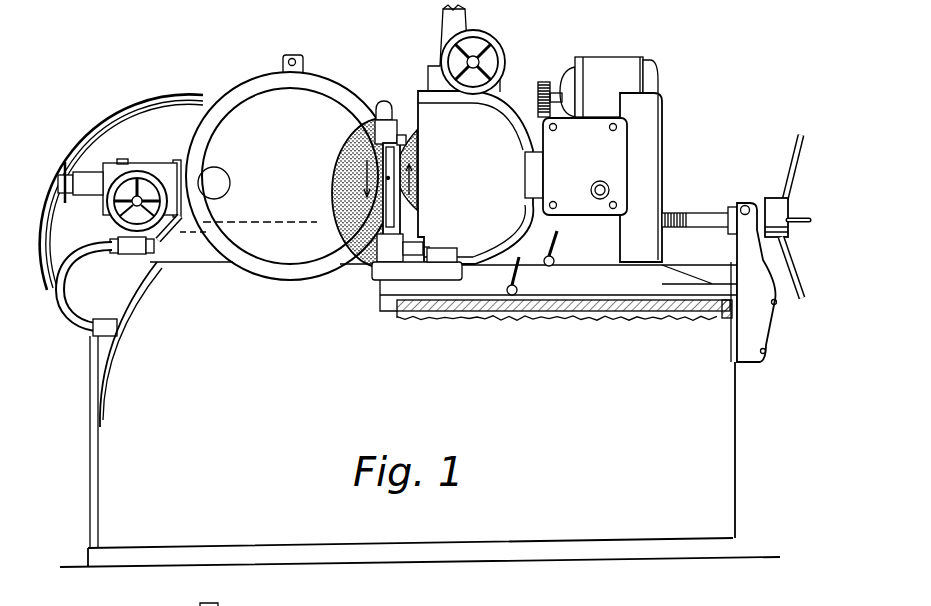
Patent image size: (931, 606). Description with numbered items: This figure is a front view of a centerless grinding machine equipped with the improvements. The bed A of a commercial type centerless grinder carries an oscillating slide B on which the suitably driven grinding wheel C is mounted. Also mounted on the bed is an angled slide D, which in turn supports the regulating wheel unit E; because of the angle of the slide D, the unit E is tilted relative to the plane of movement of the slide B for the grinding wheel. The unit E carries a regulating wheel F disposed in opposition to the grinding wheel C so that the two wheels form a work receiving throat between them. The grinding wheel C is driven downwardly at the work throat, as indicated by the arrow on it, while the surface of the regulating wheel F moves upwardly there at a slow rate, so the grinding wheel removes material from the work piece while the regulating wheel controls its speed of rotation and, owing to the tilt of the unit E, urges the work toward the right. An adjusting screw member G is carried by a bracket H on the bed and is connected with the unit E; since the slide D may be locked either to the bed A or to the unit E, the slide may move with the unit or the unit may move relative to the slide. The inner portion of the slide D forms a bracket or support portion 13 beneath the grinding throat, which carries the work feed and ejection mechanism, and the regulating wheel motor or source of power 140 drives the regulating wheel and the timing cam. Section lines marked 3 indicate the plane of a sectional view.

The bed A is at (685, 517).
The oscillating slide B is at (185, 137).
The grinding wheel C is at (352, 118).
The angled slide D is at (590, 282).
The regulating wheel unit E is at (648, 142).
The regulating wheel F is at (417, 180).
The adjusting screw member G is at (703, 213).
The bracket H is at (755, 315).
The bracket or support portion 13 is at (388, 247).
The regulating wheel motor or source of power 140 is at (615, 56).
The section line 3 is at (401, 107).